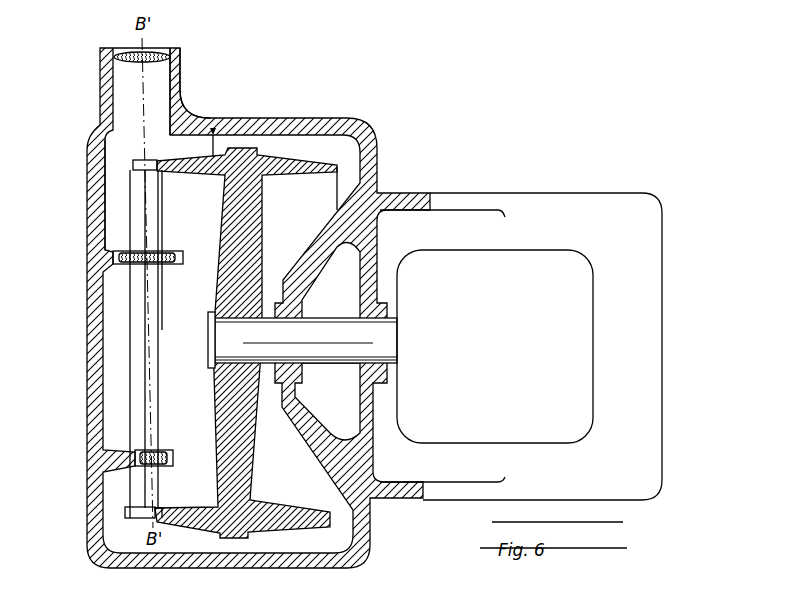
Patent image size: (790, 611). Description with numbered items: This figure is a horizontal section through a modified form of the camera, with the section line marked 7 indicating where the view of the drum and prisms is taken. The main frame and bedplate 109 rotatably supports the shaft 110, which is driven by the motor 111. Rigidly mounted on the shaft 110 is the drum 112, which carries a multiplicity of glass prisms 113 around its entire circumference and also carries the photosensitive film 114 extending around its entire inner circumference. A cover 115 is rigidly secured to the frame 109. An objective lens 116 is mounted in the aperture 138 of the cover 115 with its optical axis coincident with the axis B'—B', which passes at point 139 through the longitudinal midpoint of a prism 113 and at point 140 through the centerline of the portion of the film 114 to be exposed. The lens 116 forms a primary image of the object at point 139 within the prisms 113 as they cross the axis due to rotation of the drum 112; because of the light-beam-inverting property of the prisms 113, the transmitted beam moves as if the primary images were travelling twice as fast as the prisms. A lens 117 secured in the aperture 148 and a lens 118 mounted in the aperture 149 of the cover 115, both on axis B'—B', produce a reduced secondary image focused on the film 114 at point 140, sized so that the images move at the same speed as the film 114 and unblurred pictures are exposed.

The section line 7- 7 is at (142, 150).
The main frame and bedplate 109 is at (452, 192).
The shaft 110 is at (330, 319).
The motor 111 is at (537, 255).
The drum 112 is at (315, 163).
The prisms 113 is at (151, 160).
The photosensitive film 114 is at (165, 210).
The cover 115 is at (88, 258).
The objective lens 116 is at (146, 62).
The lens 117 is at (135, 252).
The lens 118 is at (158, 453).
The aperture 138 is at (181, 89).
The point 139 is at (133, 167).
The point 140 is at (157, 507).
The aperture 148 is at (176, 254).
The aperture 149 is at (175, 461).